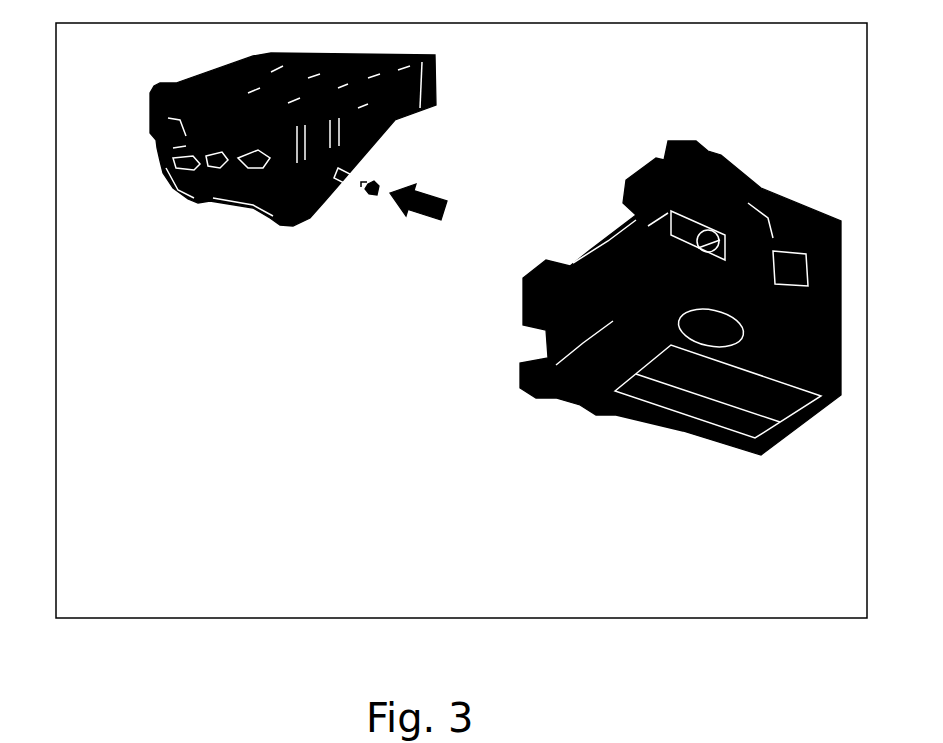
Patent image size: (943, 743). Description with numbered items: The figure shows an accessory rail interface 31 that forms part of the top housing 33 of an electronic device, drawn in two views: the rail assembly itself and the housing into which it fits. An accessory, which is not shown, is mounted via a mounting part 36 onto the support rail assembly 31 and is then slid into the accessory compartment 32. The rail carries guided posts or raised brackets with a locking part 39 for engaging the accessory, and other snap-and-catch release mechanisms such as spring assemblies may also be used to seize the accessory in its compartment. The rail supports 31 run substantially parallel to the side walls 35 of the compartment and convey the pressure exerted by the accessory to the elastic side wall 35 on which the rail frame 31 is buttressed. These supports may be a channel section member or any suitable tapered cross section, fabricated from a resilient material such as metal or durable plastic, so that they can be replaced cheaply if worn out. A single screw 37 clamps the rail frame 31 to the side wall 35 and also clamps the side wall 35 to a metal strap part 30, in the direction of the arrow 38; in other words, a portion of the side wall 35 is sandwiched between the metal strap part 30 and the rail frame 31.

The metal strap part 30 is at (345, 169).
The accessory rail interface 31 is at (245, 200).
The accessory compartment 32 is at (585, 248).
The top housing 33 is at (433, 58).
The side wall 35 is at (755, 190).
The mounting part 36 is at (172, 177).
The screw 37 is at (372, 190).
The arrow 38 is at (418, 202).
The locking part 39 is at (162, 153).